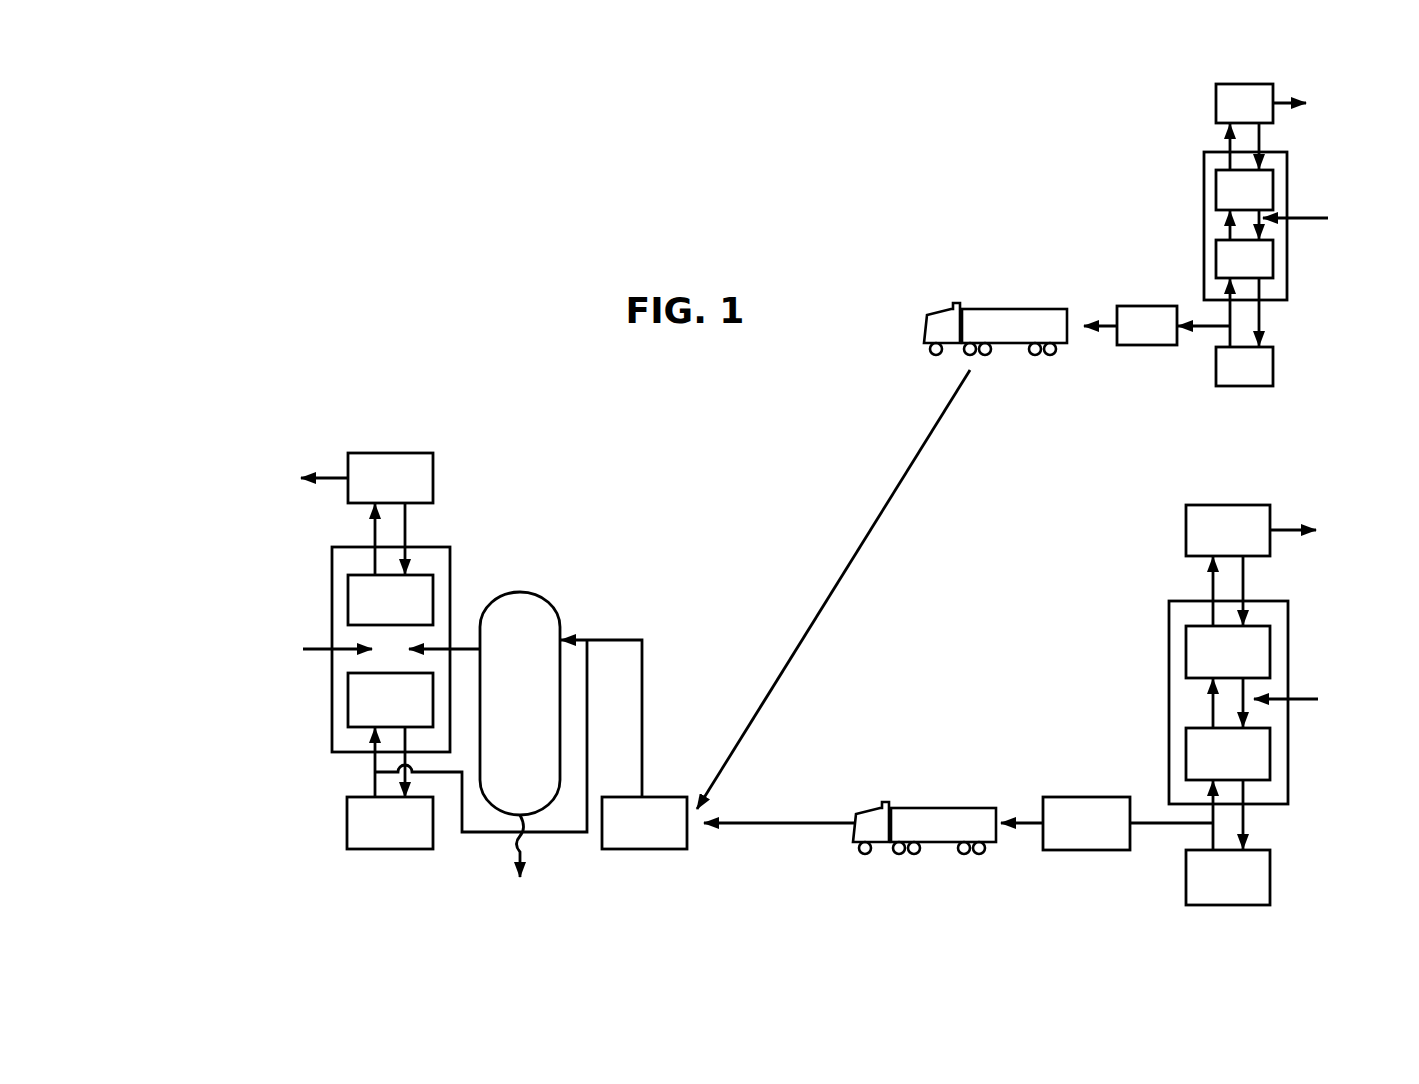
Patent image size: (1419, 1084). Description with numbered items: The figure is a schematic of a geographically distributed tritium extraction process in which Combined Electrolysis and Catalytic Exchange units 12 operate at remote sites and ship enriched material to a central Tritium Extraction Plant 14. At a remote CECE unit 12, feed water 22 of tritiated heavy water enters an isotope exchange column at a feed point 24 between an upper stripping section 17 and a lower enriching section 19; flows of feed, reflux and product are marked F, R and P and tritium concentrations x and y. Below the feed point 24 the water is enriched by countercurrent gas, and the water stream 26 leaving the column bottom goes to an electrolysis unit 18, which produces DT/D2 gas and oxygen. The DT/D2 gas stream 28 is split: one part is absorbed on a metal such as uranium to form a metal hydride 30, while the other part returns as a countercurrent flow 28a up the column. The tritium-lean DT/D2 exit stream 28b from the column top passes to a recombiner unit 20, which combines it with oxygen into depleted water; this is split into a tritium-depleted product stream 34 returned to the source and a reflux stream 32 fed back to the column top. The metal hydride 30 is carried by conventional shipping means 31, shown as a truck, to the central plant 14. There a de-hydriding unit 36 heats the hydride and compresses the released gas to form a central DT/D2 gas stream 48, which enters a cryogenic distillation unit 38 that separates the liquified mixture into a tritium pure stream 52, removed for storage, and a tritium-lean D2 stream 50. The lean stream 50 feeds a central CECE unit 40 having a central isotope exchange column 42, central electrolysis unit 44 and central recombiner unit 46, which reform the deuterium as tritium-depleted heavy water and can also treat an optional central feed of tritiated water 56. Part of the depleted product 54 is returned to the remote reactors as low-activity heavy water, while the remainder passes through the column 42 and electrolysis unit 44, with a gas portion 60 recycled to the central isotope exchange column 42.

The Combined Electrolysis and Catalytic Exchange Unit (CECE) 12 is at (1107, 217).
The Tritium Extraction Plant (TEP) 14 is at (624, 524).
The stripping section 17 is at (1271, 650).
The electrolysis unit 18 is at (1271, 878).
The enriching section 19 is at (1271, 762).
The recombiner unit 20 is at (1207, 505).
The feed water 22 is at (1313, 692).
The feed point 24 is at (1290, 704).
The water stream 26 is at (1244, 817).
The DT/D2 gas stream 28 is at (1213, 835).
The countercurrent flow 28a is at (1208, 698).
The DT/D2 exit stream 28b is at (1213, 583).
The metal hydride 30 is at (1098, 797).
The shipping means 31 is at (970, 808).
The reflux stream 32 is at (1244, 565).
The tritium-depleted product stream 34 is at (1292, 528).
The de-hydriding unit 36 is at (623, 849).
The cryogenic distillation unit 38 is at (518, 593).
The central CECE unit 40 is at (292, 568).
The central isotope exchange column 42 is at (345, 752).
The central electrolysis unit 44 is at (347, 820).
The central recombiner unit 46 is at (407, 453).
The central DT/D2 gas stream 48 is at (643, 660).
The tritium-lean D2 stream 50 is at (465, 649).
The tritium pure stream 52 is at (523, 848).
The tritium depleted DTO/D2O product 54 is at (333, 478).
The central feed of tritiated water 56 is at (318, 650).
The returned electrolysed gas portion 60 is at (407, 777).